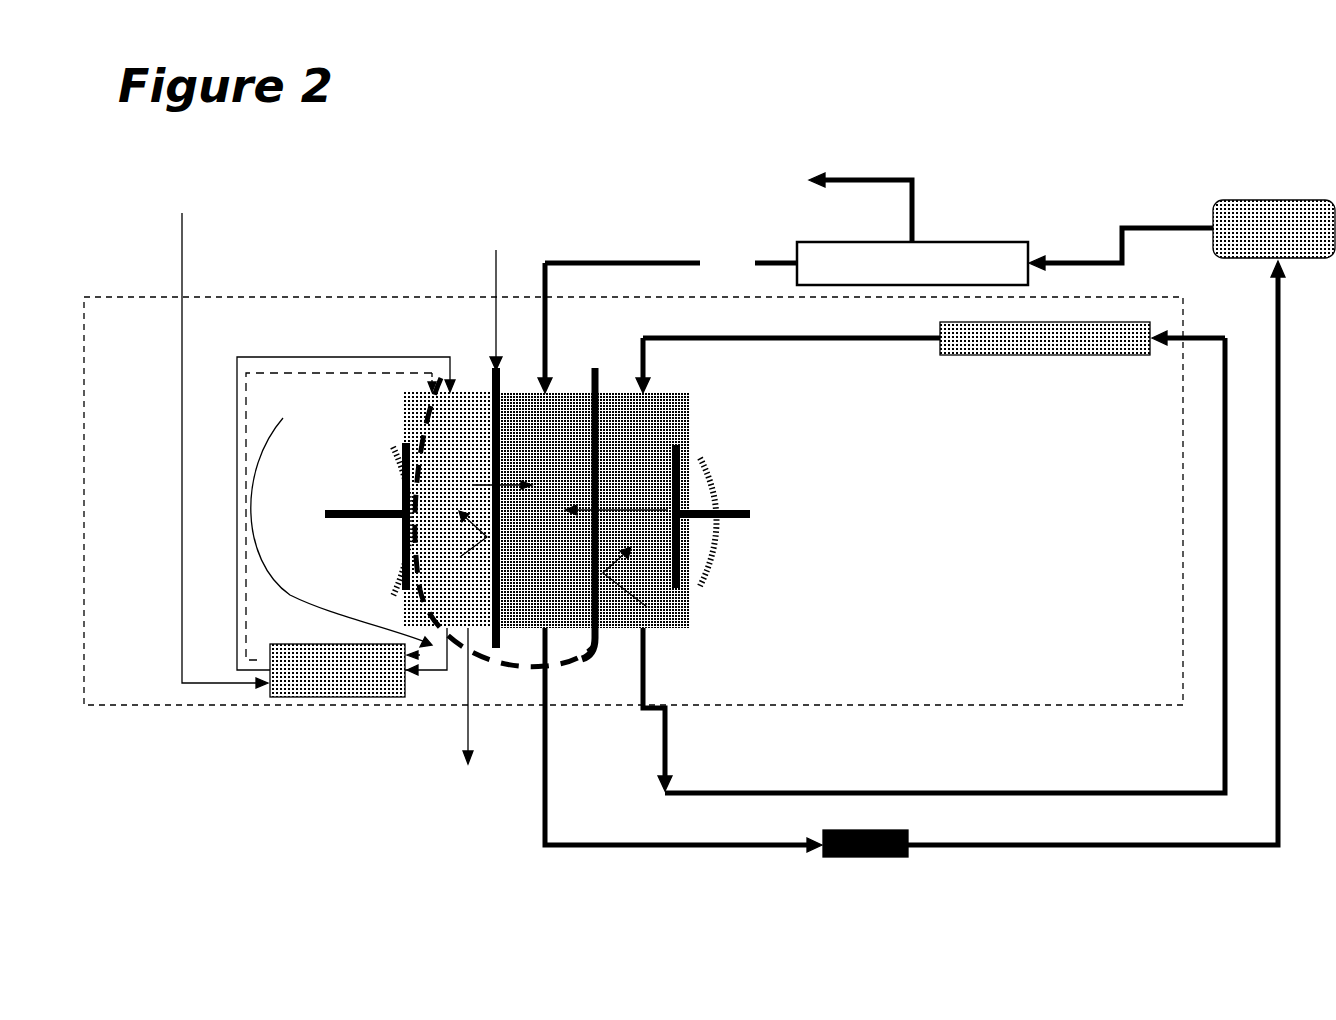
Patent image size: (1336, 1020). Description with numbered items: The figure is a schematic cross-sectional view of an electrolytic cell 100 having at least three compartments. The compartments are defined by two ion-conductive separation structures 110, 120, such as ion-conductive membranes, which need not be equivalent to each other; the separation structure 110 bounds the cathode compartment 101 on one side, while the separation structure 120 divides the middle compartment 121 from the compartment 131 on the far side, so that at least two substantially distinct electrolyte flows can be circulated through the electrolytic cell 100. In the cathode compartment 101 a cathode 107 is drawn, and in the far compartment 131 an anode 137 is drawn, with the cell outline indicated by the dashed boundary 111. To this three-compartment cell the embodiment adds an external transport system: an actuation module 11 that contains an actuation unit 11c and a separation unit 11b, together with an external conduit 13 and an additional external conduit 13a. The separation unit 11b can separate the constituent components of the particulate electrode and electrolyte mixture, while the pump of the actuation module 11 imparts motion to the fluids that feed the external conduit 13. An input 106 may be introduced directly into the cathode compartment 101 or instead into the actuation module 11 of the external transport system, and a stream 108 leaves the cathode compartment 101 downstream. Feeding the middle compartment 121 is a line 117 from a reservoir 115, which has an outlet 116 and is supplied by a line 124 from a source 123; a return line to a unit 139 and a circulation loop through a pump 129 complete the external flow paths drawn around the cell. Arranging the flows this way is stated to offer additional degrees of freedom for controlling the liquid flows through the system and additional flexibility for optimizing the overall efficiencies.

The electrolytic cell 100 is at (375, 236).
The input 106 is at (200, 225).
The external conduit 13 is at (428, 676).
The additional external conduit 13a is at (383, 381).
The cathode 107 is at (337, 527).
The cathode compartment 101 is at (467, 510).
The separation structure 110 is at (500, 431).
The middle electrolyte compartment 121 is at (593, 510).
The anode compartment 131 is at (643, 510).
The separation structure 120 is at (596, 358).
The anode 137 is at (742, 506).
The electrolytic cell 111 is at (500, 652).
The cathode compartment outlet 108 is at (464, 731).
The actuation module 11 is at (358, 662).
The separation unit 11b is at (328, 670).
The actuation unit 11c is at (373, 670).
The electrolyte feed line 117 is at (667, 323).
The electrolyte reservoir 115 is at (912, 263).
The product outlet 116 is at (922, 192).
The supply line 124 is at (1107, 250).
The water source 123 is at (1274, 229).
The gas separator 139 is at (930, 557).
The pump 129 is at (915, 559).